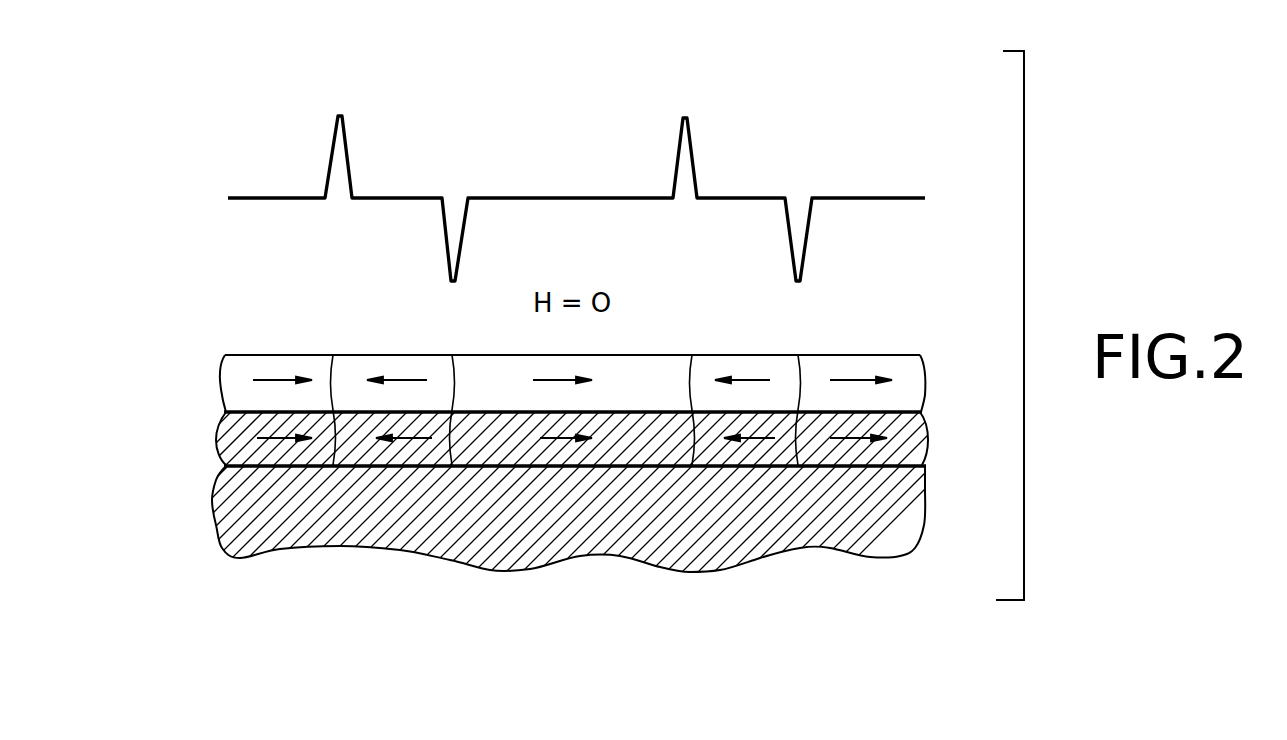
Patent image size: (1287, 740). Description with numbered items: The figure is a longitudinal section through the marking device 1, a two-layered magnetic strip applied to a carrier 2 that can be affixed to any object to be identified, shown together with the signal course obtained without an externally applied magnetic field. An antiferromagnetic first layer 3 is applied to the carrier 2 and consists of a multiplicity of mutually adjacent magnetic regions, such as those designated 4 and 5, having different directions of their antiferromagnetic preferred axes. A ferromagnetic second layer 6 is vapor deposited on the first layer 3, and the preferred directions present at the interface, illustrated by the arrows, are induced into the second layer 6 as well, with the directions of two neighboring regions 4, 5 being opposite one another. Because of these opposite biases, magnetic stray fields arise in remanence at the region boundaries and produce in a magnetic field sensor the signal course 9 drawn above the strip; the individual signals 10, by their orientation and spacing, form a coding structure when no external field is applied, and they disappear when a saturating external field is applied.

The marking device 1 is at (862, 339).
The carrier 2 is at (251, 535).
The first layer 3 is at (203, 440).
The magnetic region 4 is at (915, 443).
The magnetic region 5 is at (700, 435).
The second layer 6 is at (240, 380).
The signal course 9 is at (576, 178).
The signals 10 is at (690, 150).